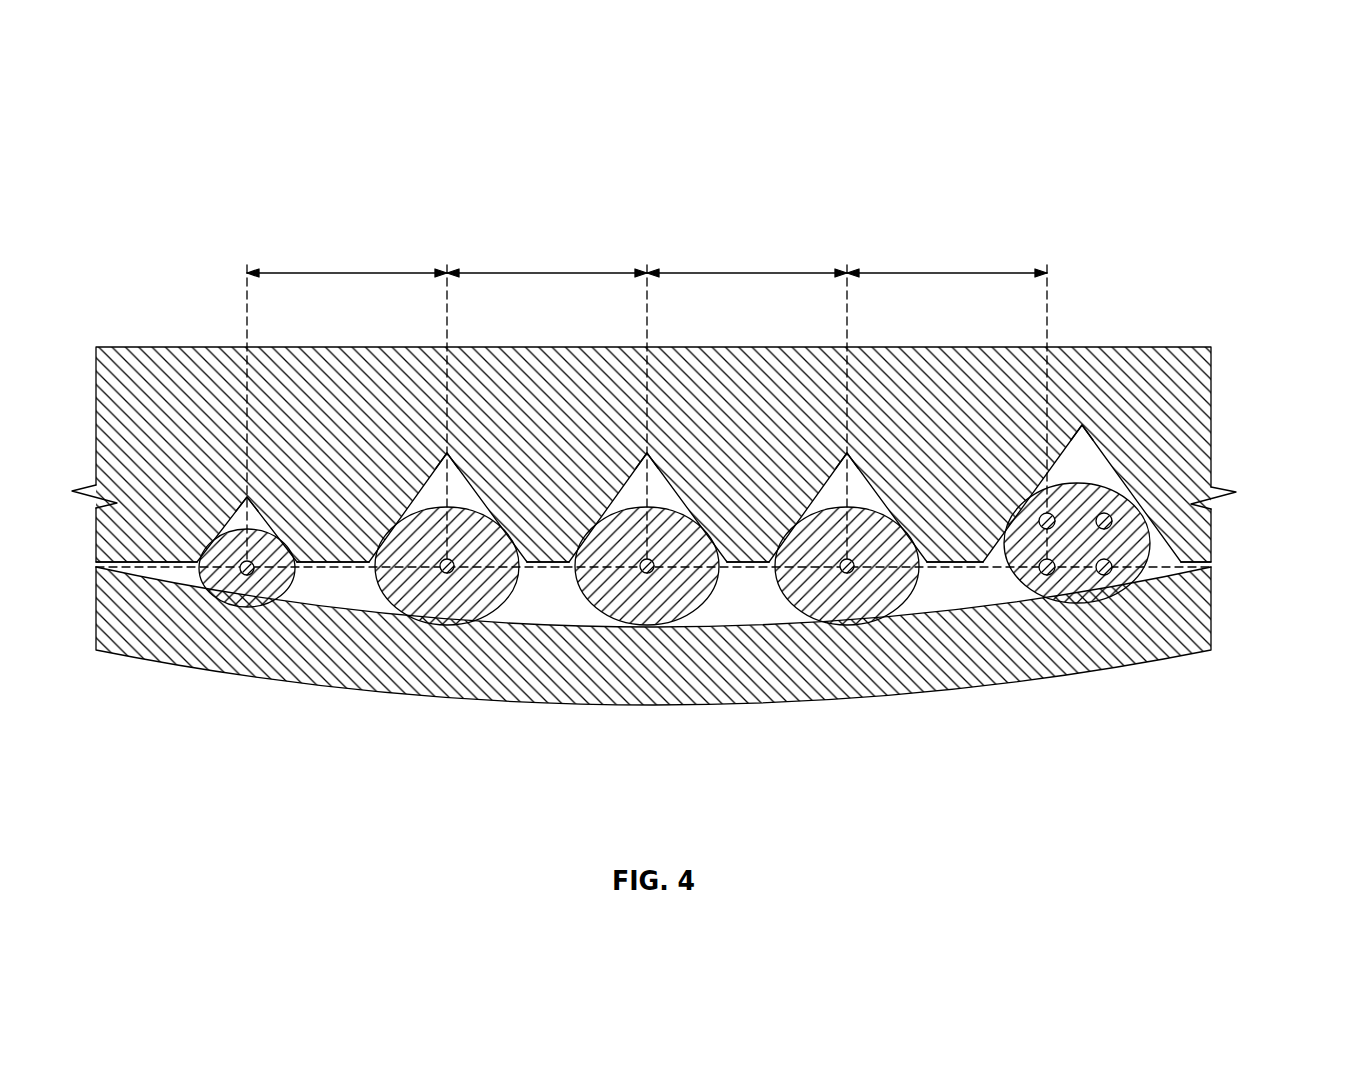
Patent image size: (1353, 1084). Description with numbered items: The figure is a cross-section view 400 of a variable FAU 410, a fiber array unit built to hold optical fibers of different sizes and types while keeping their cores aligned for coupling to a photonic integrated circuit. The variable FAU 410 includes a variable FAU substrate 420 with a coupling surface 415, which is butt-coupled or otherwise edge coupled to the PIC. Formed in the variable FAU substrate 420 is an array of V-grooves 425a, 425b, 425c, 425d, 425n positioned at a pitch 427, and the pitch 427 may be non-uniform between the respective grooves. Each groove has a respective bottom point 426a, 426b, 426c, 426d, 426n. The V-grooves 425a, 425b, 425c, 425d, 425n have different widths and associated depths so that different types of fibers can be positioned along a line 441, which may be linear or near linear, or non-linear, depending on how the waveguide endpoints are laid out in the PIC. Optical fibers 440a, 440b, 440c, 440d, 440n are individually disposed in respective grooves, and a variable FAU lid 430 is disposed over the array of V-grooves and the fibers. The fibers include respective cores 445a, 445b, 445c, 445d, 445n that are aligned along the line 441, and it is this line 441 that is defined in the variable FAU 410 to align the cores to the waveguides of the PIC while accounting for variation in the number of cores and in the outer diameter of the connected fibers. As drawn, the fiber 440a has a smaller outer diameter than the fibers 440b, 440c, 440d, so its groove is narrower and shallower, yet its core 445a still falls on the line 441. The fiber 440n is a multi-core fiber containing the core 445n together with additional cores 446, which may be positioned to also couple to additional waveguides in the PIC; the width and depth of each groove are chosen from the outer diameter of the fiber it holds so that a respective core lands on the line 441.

The cross-section view 400 is at (1194, 140).
The variable FAU 410 is at (1242, 338).
The coupling surface 415 is at (1188, 384).
The variable FAU substrate 420 is at (1148, 438).
The V-groove 425a is at (267, 522).
The V-groove 425b is at (468, 502).
The V-groove 425c is at (668, 502).
The V-groove 425d is at (868, 502).
The V-groove 425n is at (1080, 477).
The bottom point 426a is at (247, 497).
The bottom point 426b is at (447, 453).
The bottom point 426c is at (647, 453).
The bottom point 426d is at (847, 453).
The bottom point 426n is at (1082, 425).
The pitch 427 is at (505, 273).
The variable FAU lid 430 is at (700, 683).
The optical fiber 440a is at (216, 588).
The optical fiber 440b is at (398, 603).
The optical fiber 440c is at (598, 608).
The optical fiber 440d is at (798, 608).
The optical fiber 440n is at (1022, 585).
The line 441 is at (1168, 580).
The core 445a is at (247, 575).
The core 445b is at (447, 573).
The core 445c is at (647, 573).
The core 445d is at (847, 573).
The core 445n is at (1047, 578).
The cores 446 is at (1098, 578).